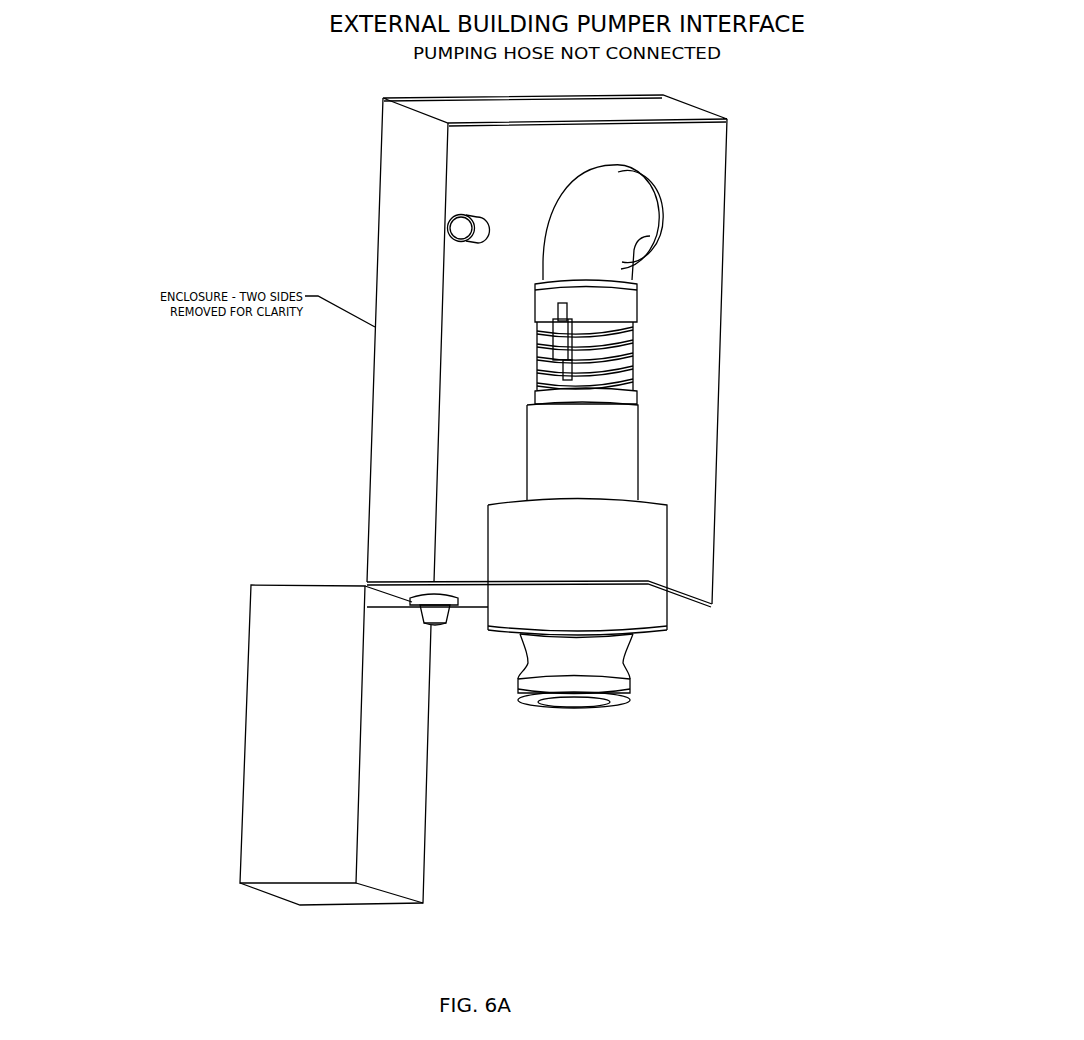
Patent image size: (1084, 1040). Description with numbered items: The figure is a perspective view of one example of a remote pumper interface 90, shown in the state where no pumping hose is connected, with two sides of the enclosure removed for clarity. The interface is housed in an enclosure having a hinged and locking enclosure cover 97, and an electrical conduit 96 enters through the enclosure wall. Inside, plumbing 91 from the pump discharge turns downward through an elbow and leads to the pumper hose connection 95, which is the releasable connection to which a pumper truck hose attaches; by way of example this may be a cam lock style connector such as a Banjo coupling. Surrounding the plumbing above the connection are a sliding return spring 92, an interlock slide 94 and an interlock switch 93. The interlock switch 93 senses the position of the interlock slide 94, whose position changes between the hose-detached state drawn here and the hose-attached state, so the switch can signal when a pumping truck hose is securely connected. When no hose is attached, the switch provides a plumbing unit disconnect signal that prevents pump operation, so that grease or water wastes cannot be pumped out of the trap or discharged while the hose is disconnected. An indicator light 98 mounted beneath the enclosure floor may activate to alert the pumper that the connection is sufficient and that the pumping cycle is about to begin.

The remote pumper interface 90 is at (728, 101).
The plumbing from pump discharge 91 is at (672, 197).
The sliding return spring 92 is at (633, 330).
The interlock switch 93 is at (573, 345).
The interlock slide 94 is at (637, 458).
The pumper hose connection 95 is at (630, 705).
The electrical conduit 96 is at (450, 218).
The enclosure cover 97 is at (245, 710).
The indicator light 98 is at (437, 626).